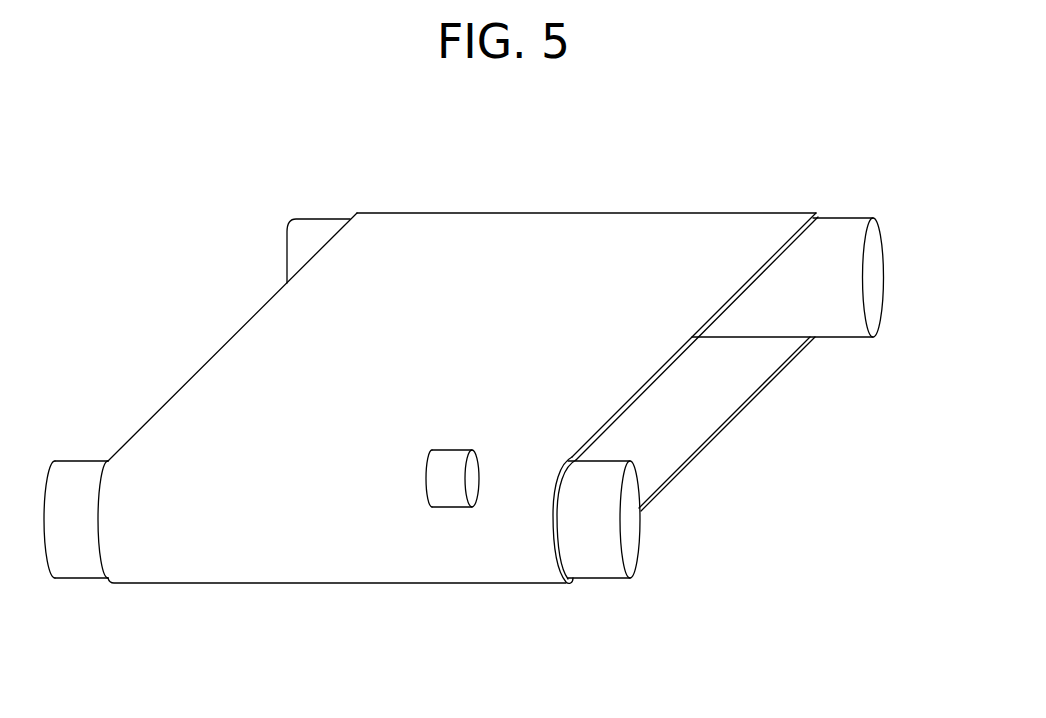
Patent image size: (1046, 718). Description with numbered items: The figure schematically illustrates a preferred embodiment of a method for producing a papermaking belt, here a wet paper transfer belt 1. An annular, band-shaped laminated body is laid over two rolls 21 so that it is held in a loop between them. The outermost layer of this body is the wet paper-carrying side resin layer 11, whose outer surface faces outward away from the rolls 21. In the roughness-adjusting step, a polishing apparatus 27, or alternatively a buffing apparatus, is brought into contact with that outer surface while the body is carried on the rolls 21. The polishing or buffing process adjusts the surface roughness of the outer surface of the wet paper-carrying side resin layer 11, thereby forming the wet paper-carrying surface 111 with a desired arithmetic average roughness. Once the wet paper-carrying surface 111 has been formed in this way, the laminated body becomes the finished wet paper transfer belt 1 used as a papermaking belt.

The wet paper transfer belt 1 is at (613, 186).
The wet paper-carrying side resin layer 11 is at (278, 302).
The wet paper-carrying surface 111 is at (230, 359).
The roll 21 is at (875, 284).
The polishing apparatus 27 is at (457, 524).